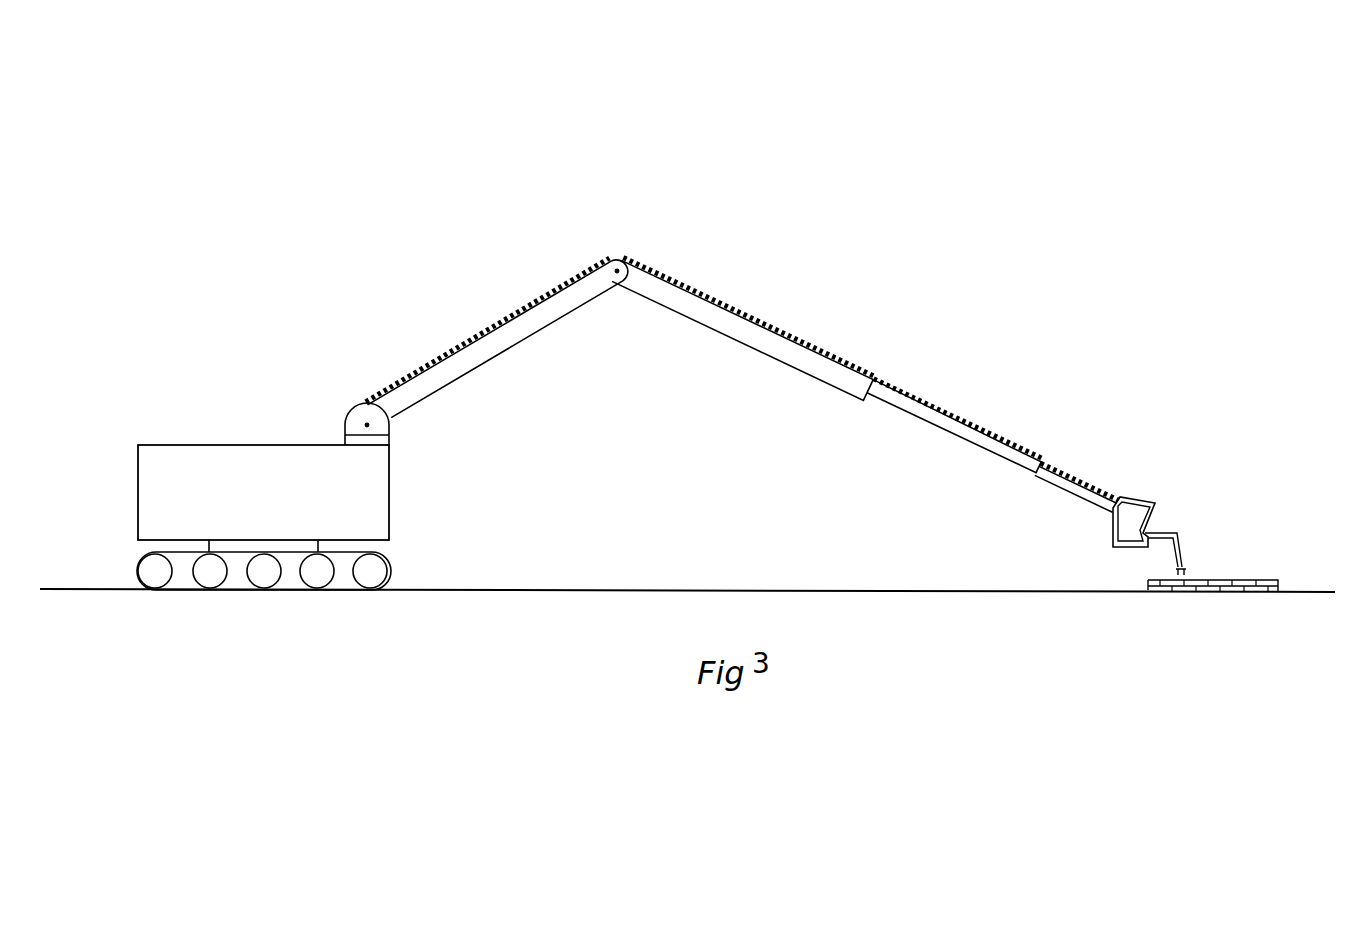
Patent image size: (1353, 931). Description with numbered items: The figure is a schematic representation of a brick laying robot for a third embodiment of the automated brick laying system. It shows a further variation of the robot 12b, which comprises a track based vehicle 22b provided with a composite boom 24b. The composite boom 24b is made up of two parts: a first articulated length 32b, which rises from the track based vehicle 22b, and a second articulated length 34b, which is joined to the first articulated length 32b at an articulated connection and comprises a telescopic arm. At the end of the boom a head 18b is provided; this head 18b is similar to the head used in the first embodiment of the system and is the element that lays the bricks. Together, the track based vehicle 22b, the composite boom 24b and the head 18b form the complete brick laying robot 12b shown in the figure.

The robot 12b is at (661, 133).
The track based vehicle 22b is at (238, 462).
The composite boom 24b is at (813, 282).
The first articulated length 32b is at (493, 345).
The second articulated length 34b is at (758, 342).
The head 18b is at (1170, 488).